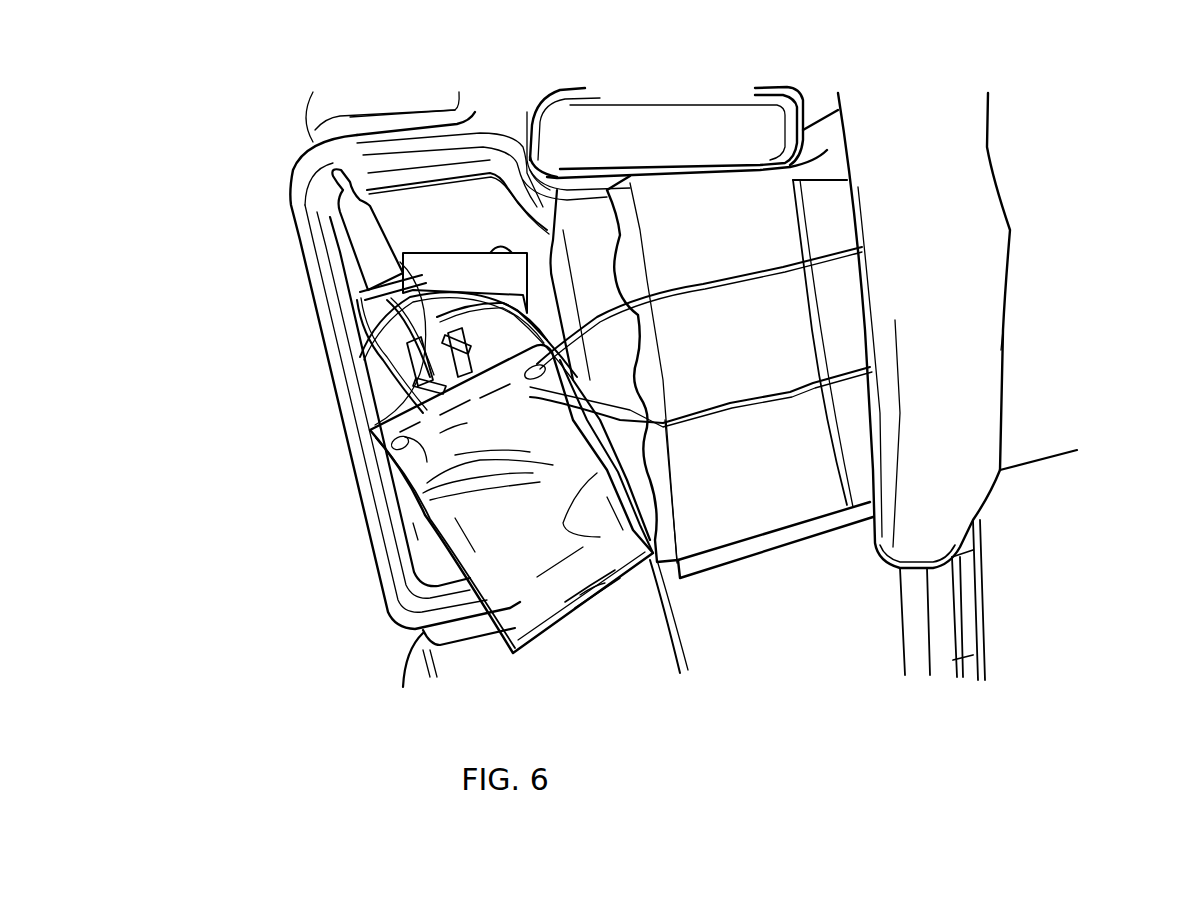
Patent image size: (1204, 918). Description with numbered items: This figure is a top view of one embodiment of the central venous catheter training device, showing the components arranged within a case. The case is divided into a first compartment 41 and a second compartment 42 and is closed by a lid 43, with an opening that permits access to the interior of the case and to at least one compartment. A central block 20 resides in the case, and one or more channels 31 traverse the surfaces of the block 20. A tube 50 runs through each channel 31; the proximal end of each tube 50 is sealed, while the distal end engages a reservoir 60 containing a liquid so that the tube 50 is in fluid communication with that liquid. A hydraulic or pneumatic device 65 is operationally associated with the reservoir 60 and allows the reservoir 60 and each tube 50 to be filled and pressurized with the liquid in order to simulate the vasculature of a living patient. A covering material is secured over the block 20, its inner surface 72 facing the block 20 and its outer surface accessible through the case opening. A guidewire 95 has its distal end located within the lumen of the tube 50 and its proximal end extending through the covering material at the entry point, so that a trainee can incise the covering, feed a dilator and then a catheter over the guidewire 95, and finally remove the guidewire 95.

The central block 20 is at (703, 453).
The channel 31 is at (703, 283).
The first compartment 41 is at (738, 328).
The second compartment 42 is at (458, 218).
The lid 43 is at (892, 622).
The tube 50 is at (803, 263).
The reservoir 60 is at (490, 504).
The hydraulic or pneumatic device 65 is at (377, 260).
The inner surface 72 is at (957, 272).
The guidewire 95 is at (1002, 340).